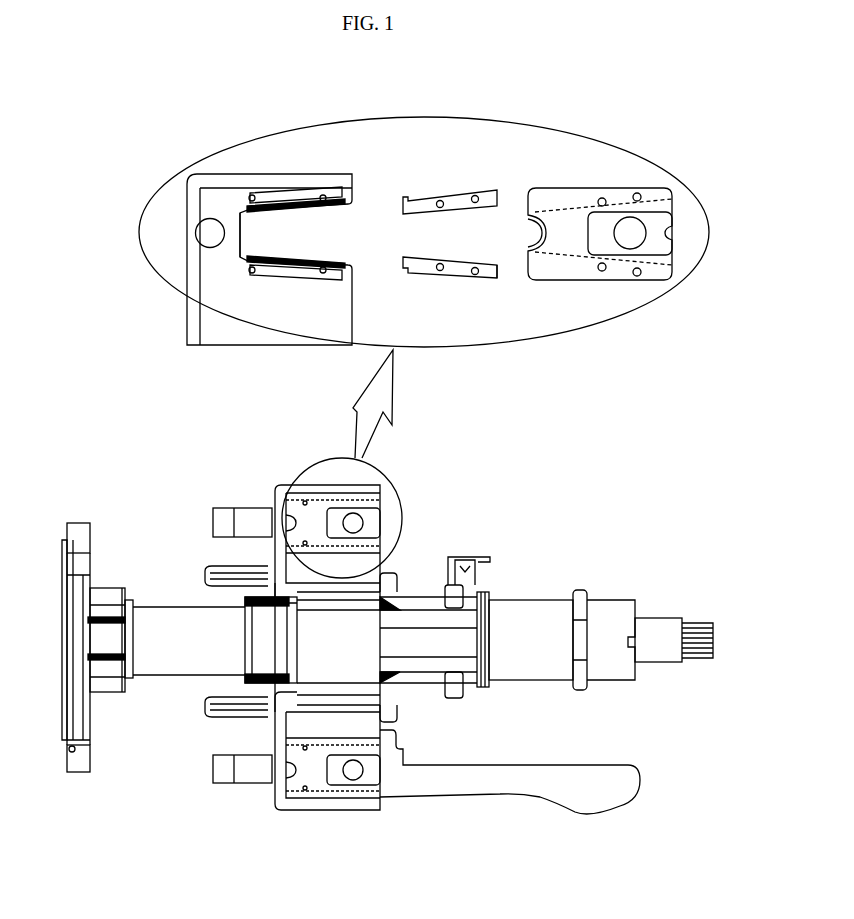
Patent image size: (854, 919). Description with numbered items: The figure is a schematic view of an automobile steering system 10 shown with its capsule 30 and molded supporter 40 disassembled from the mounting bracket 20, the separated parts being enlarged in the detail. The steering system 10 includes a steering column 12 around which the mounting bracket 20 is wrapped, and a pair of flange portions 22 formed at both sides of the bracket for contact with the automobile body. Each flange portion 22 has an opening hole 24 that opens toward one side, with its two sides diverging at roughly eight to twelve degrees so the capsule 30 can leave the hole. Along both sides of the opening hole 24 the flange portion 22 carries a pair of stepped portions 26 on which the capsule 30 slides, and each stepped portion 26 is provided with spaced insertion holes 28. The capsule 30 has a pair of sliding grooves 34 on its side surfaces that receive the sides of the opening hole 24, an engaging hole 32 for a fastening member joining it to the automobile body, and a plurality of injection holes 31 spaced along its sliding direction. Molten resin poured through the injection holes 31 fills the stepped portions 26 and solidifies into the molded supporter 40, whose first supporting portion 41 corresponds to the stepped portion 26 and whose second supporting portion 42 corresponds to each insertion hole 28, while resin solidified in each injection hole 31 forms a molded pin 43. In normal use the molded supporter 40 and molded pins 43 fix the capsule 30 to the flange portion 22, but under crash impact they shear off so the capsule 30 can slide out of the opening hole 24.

The steering system 10 is at (387, 609).
The steering column 12 is at (177, 612).
The mounting bracket 20 is at (234, 228).
The flange portion 22 is at (225, 205).
The opening hole 24 is at (320, 230).
The stepped portion 26 is at (293, 196).
The insertion hole 28 is at (253, 195).
The capsule 30 is at (619, 217).
The injection hole 31 is at (637, 193).
The engaging hole 32 is at (637, 233).
The sliding groove 34 is at (652, 198).
The molded supporter 40 is at (456, 202).
The first supporting portion 41 is at (493, 278).
The second supporting portion 42 is at (407, 275).
The molded pin 43 is at (475, 274).